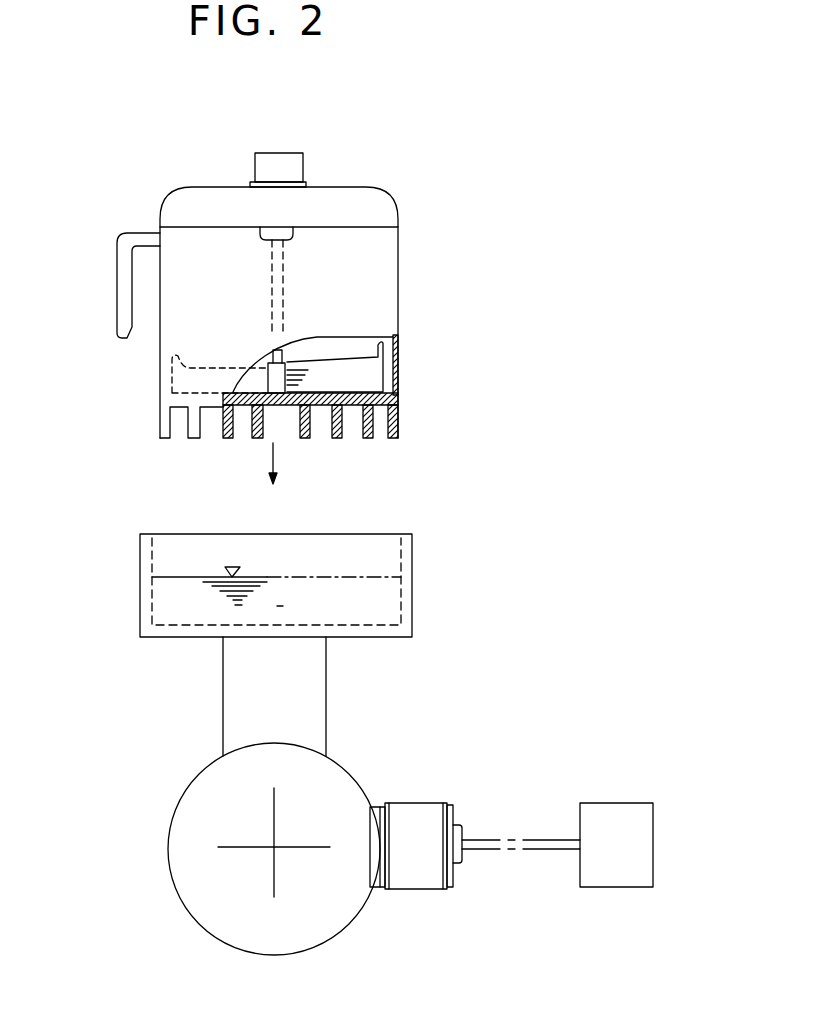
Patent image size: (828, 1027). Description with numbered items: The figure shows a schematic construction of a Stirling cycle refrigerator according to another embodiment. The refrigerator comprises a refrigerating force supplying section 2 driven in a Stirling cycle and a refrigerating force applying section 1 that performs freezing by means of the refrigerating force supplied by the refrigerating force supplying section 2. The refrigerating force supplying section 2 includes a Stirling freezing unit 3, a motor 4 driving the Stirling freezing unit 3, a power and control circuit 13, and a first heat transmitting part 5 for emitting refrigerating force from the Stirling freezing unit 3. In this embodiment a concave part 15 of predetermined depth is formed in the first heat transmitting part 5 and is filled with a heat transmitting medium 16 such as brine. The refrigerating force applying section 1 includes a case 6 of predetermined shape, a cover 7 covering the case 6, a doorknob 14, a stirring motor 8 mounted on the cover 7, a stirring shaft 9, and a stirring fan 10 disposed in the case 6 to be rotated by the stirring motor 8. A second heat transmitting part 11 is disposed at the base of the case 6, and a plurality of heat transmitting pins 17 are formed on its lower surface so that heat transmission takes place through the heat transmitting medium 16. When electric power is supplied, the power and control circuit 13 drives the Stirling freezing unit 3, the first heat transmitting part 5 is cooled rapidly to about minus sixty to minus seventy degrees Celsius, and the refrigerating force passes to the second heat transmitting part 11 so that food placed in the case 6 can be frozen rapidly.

The refrigerating force applying section 1 is at (122, 370).
The refrigerating force supplying section 2 is at (150, 860).
The Stirling freezing unit 3 is at (282, 930).
The motor 4 is at (416, 882).
The first heat transmitting part 5 is at (413, 607).
The case 6 is at (380, 264).
The cover 7 is at (337, 195).
The stirring motor 8 is at (276, 163).
The stirring shaft 9 is at (282, 357).
The stirring fan 10 is at (373, 370).
The second heat transmitting part 11 is at (285, 412).
The power and control circuit 13 is at (635, 842).
The doorknob 14 is at (127, 277).
The inner liner 15 is at (396, 623).
The heat transmitting medium 16 is at (172, 601).
The heat transmitting pins 17 is at (333, 437).